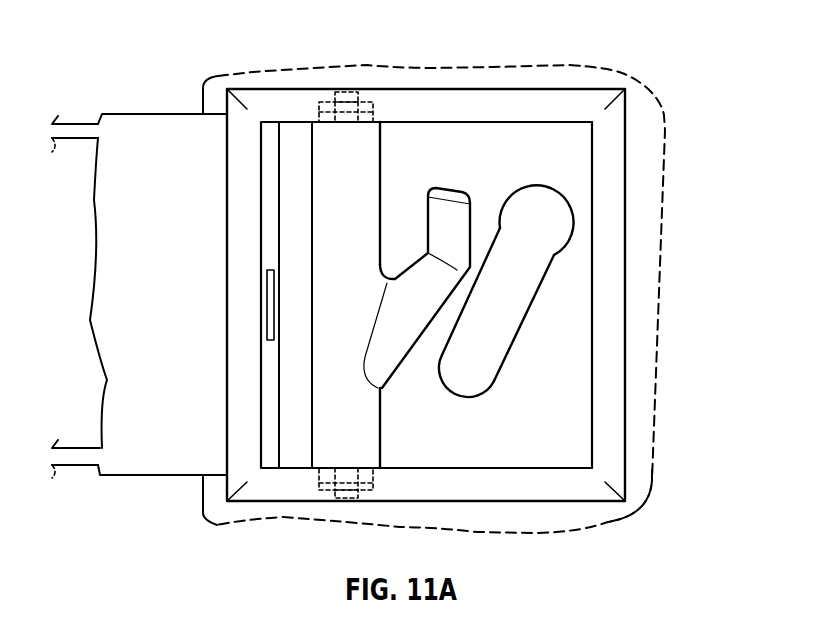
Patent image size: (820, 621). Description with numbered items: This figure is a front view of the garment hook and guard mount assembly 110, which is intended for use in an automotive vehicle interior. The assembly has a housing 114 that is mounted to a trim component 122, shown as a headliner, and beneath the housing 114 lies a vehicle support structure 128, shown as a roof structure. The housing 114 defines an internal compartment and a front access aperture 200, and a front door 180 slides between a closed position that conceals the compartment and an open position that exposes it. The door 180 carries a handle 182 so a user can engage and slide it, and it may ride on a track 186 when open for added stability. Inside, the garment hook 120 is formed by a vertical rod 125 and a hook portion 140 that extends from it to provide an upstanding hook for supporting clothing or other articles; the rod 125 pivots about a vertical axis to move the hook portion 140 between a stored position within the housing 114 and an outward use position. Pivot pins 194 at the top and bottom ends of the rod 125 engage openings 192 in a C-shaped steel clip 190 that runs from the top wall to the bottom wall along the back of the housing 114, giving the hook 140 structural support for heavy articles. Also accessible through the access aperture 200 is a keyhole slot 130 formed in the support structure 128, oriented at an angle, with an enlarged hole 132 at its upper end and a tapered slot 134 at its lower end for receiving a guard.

The garment hook and guard mount assembly 110 is at (660, 72).
The housing 114 is at (632, 126).
The garment hook 120 is at (382, 160).
The trim component 122 is at (653, 488).
The vertical rod 125 is at (338, 207).
The vehicle support structure 128 is at (552, 428).
The keyhole slot 130 is at (535, 293).
The enlarged hole 132 is at (550, 218).
The tapered slot 134 is at (478, 347).
The hook portion 140 is at (452, 187).
The front door 180 is at (145, 138).
The handle 182 is at (273, 310).
The track 186 is at (87, 123).
The C-shaped steel clip 190 is at (347, 90).
The openings 192 is at (357, 100).
The pivot pins 194 is at (328, 100).
The access aperture 200 is at (559, 398).